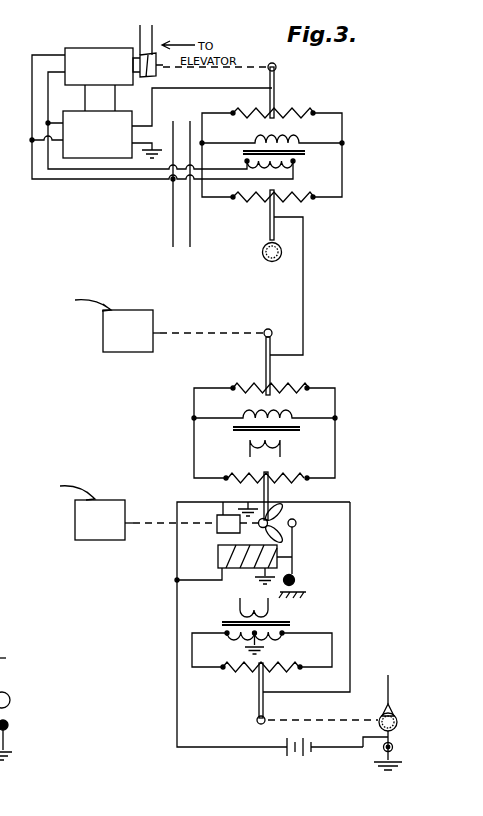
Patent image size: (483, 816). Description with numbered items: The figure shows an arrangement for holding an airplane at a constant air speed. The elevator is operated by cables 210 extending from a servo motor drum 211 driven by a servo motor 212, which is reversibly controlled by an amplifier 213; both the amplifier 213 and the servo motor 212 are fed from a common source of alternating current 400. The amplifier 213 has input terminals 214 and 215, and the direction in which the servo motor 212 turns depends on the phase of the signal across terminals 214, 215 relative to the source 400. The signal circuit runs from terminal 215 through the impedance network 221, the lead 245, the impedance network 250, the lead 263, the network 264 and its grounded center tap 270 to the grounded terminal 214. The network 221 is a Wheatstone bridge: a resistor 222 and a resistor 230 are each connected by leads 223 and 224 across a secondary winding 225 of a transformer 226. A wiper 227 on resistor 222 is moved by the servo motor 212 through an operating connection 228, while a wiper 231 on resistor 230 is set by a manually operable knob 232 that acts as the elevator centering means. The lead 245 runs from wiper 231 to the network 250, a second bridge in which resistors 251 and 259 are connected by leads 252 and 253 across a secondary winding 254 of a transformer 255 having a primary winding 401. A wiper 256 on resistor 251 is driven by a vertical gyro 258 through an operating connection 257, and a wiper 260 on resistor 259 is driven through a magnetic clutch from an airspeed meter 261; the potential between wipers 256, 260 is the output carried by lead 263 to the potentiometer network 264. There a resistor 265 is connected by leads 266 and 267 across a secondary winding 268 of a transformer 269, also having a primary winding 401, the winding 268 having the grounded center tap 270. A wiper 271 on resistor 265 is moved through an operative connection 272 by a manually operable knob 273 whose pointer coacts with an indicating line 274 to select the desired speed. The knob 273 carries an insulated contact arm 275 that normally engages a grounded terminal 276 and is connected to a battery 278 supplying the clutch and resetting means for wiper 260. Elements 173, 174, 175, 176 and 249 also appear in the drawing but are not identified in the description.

The motor 173 is at (8, 697).
The lead 174 is at (7, 660).
The contact 175 is at (8, 722).
The ground 176 is at (10, 745).
The cables 210 is at (140, 30).
The servo motor drum 211 is at (160, 68).
The servo motor 212 is at (70, 52).
The amplifier 213 is at (74, 118).
The input terminal 214 is at (152, 146).
The input terminal 215 is at (152, 100).
The impedance network 221 is at (334, 137).
The resistor 222 is at (295, 112).
The lead 223 is at (202, 127).
The lead 224 is at (342, 128).
The secondary winding 225 is at (257, 141).
The transformer 226 is at (240, 156).
The wiper 227 is at (275, 79).
The operating connection 228 is at (273, 63).
The resistor 230 is at (312, 200).
The wiper 231 is at (270, 230).
The manually operable knob 232 is at (272, 262).
The lead 245 is at (303, 262).
The conductor 249 is at (177, 622).
The impedance network 250 is at (328, 413).
The resistor 251 is at (292, 388).
The lead 252 is at (335, 405).
The lead 253 is at (194, 402).
The secondary winding 254 is at (250, 416).
The transformer 255 is at (235, 440).
The wiper 256 is at (266, 358).
The operating connection 257 is at (209, 330).
The vertical gyro 258 is at (130, 346).
The resistor 259 is at (290, 480).
The wiper 260 is at (268, 490).
The airspeed meter 261 is at (107, 531).
The lead 263 is at (350, 575).
The network 264 is at (286, 635).
The resistor 265 is at (245, 669).
The lead 266 is at (332, 655).
The lead 267 is at (192, 657).
The secondary winding 268 is at (226, 636).
The transformer 269 is at (212, 614).
The center tap 270 is at (256, 640).
The wiper 271 is at (258, 705).
The operative connection 272 is at (312, 722).
The manually operable knob 273 is at (394, 715).
The indicating line 274 is at (390, 685).
The contact arm 275 is at (392, 745).
The grounded terminal 276 is at (392, 758).
The battery 278 is at (283, 750).
The source of alternating current 400 is at (176, 204).
The primary winding 401 is at (294, 166).